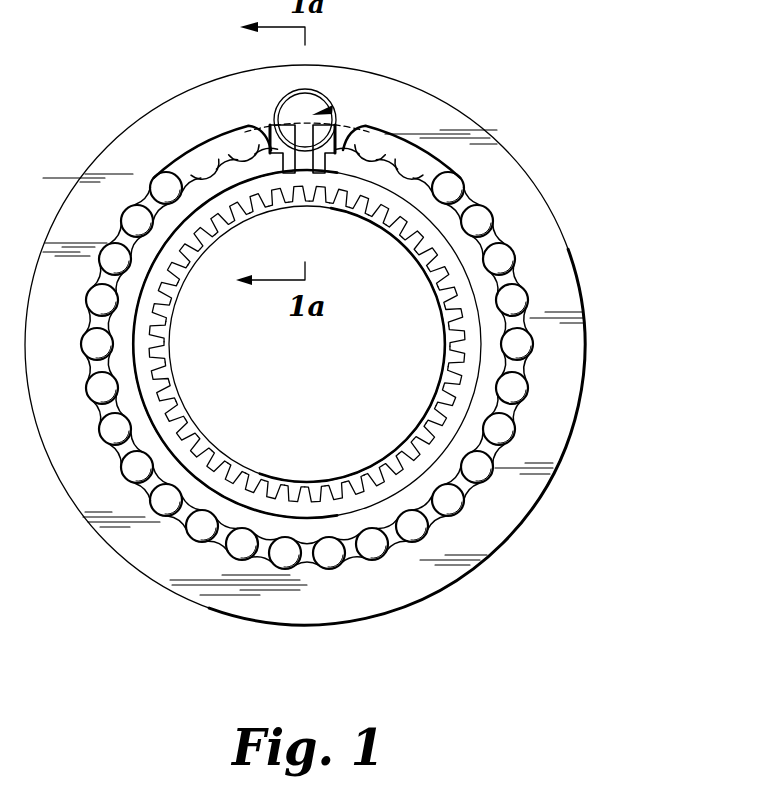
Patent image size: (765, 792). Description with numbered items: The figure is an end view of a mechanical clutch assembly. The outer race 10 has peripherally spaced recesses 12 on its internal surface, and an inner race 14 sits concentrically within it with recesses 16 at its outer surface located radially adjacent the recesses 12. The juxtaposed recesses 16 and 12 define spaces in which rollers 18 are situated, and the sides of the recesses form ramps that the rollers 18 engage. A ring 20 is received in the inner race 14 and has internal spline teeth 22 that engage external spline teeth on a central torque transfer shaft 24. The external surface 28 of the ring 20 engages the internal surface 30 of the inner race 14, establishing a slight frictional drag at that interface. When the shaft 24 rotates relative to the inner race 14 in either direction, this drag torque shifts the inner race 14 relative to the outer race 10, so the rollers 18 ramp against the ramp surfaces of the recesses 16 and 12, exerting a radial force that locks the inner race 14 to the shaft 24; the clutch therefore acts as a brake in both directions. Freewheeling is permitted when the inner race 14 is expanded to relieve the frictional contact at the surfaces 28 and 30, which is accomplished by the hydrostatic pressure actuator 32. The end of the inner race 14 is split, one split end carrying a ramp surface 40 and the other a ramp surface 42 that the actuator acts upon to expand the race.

The outer race 10 is at (542, 268).
The recesses 12 is at (463, 187).
The inner race 14 is at (417, 193).
The recesses 16 is at (498, 293).
The rollers 18 is at (493, 260).
The ring 20 is at (470, 380).
The internal spline teeth 22 is at (410, 437).
The central torque transfer shaft 24 is at (307, 344).
The external surface 28 is at (433, 470).
The internal surface 30 is at (458, 408).
The hydrostatic pressure actuator 32 is at (334, 104).
The ramp surface 40 is at (320, 110).
The ramp surface 42 is at (268, 153).